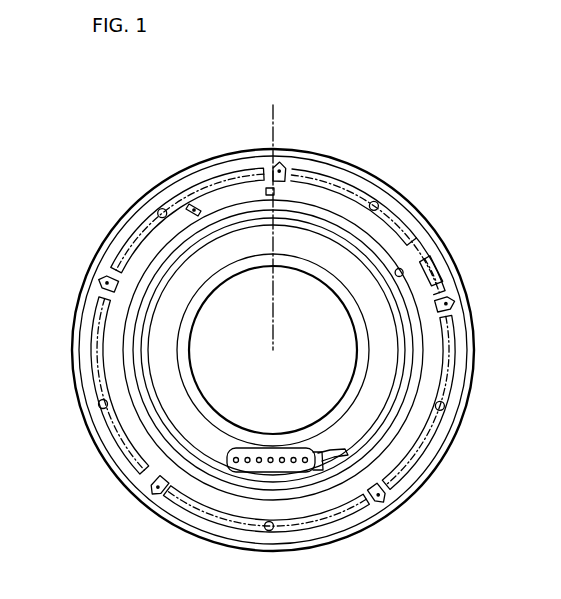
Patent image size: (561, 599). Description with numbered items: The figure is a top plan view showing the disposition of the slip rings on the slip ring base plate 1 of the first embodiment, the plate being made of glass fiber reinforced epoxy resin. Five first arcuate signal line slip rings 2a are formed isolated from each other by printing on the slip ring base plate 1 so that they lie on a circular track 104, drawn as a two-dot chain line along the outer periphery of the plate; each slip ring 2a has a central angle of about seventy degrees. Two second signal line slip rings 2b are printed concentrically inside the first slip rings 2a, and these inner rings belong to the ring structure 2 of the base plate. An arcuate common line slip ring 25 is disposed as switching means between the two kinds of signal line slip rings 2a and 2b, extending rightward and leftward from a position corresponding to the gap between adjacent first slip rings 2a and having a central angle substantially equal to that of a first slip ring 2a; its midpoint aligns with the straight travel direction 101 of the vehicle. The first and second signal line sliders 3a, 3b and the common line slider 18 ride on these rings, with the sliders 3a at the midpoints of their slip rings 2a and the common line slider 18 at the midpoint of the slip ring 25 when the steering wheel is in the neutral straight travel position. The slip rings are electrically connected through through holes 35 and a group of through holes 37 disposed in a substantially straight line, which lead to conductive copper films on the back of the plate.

The slip ring base plate 1 is at (417, 486).
The rotatable ring 2 is at (396, 373).
The first arcuate signal line slip ring 2a is at (130, 238).
The second signal line slip ring 2b is at (422, 333).
The first signal line slider 3a is at (160, 209).
The second signal line slider 3b is at (403, 271).
The common line slider 18 is at (266, 187).
The arcuate common line slip ring 25 is at (404, 212).
The through hole 35 is at (100, 275).
The group of through holes 37 is at (282, 448).
The straight travel direction 101 is at (276, 125).
The circular track 104 is at (443, 346).